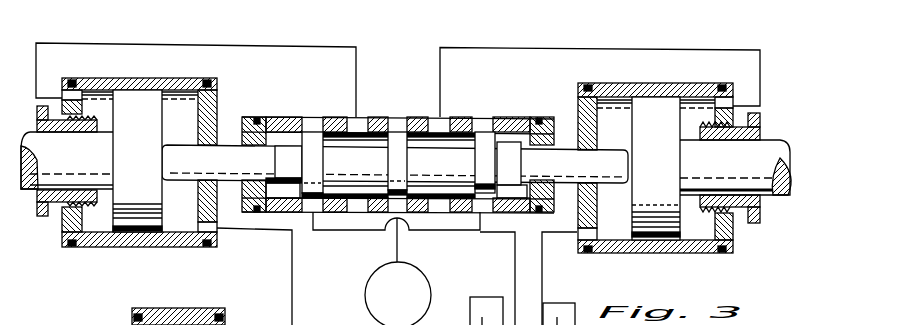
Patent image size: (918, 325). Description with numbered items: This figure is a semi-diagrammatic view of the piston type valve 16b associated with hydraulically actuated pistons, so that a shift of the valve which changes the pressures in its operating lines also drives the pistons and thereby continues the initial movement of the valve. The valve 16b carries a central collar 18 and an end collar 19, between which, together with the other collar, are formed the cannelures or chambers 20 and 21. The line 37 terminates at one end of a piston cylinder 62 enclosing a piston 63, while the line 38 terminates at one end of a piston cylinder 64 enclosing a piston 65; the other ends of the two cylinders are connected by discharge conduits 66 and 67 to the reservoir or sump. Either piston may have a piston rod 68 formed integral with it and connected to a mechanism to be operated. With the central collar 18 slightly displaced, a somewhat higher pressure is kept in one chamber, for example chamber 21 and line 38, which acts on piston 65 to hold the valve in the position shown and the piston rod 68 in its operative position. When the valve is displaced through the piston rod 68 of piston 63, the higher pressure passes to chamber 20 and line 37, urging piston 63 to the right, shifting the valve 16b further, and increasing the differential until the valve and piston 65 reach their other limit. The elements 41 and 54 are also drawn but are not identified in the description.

The line 37 is at (196, 72).
The line 38 is at (600, 72).
The piston 63 is at (143, 100).
The piston 65 is at (648, 107).
The valve 16b is at (312, 150).
The central collar 18 is at (395, 131).
The collar 19 is at (478, 152).
The sleeve 41 is at (336, 220).
The cannelure 20 is at (375, 192).
The cannelure 21 is at (458, 195).
The piston cylinder 62 is at (97, 247).
The piston cylinder 64 is at (617, 253).
The discharge conduit 66 is at (262, 231).
The discharge conduit 67 is at (567, 234).
The piston rod 68 is at (40, 208).
The base member 54 is at (143, 307).